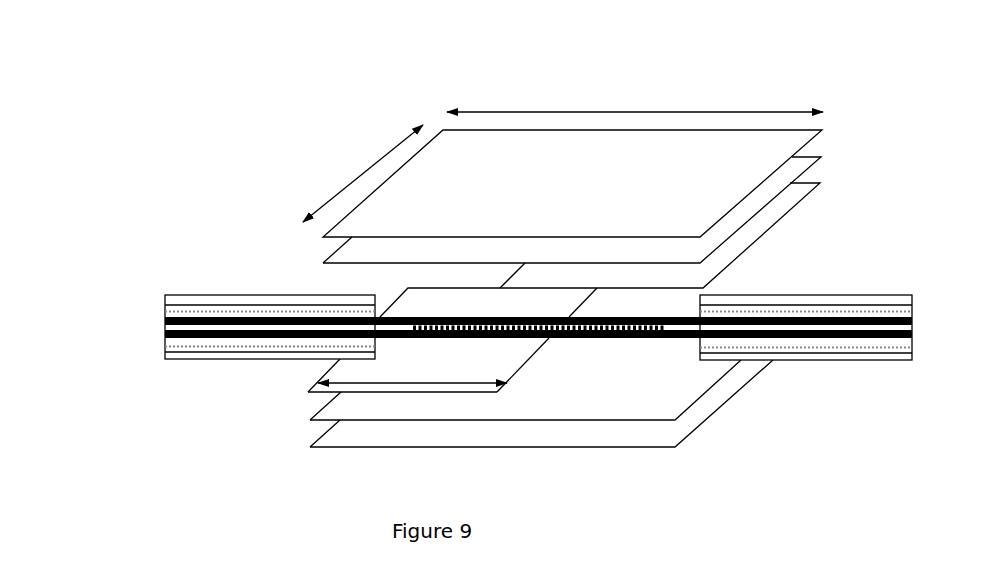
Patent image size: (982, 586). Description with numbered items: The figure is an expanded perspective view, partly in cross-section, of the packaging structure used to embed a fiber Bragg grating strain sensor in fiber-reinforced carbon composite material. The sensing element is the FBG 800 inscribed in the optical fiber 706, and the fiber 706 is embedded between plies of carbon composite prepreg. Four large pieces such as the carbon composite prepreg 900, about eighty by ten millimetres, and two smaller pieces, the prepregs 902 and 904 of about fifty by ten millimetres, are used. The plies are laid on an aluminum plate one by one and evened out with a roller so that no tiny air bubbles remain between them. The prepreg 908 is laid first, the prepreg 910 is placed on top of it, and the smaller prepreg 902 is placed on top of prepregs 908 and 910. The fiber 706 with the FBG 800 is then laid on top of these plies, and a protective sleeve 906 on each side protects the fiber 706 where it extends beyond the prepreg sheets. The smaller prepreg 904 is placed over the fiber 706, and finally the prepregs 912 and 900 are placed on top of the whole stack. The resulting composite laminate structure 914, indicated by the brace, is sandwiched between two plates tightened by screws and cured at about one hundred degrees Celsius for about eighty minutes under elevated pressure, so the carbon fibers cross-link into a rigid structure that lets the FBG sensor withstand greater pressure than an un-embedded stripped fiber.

The carbon composite prepreg 900 is at (458, 143).
The prepreg 912 is at (848, 143).
The prepreg 904 is at (733, 262).
The prepreg 902 is at (308, 392).
The prepreg 910 is at (310, 420).
The prepreg 908 is at (310, 447).
The protective sleeve 906 is at (218, 291).
The FBG 800 is at (594, 341).
The fiber 706 is at (150, 256).
The composite laminate structure 914 is at (98, 84).